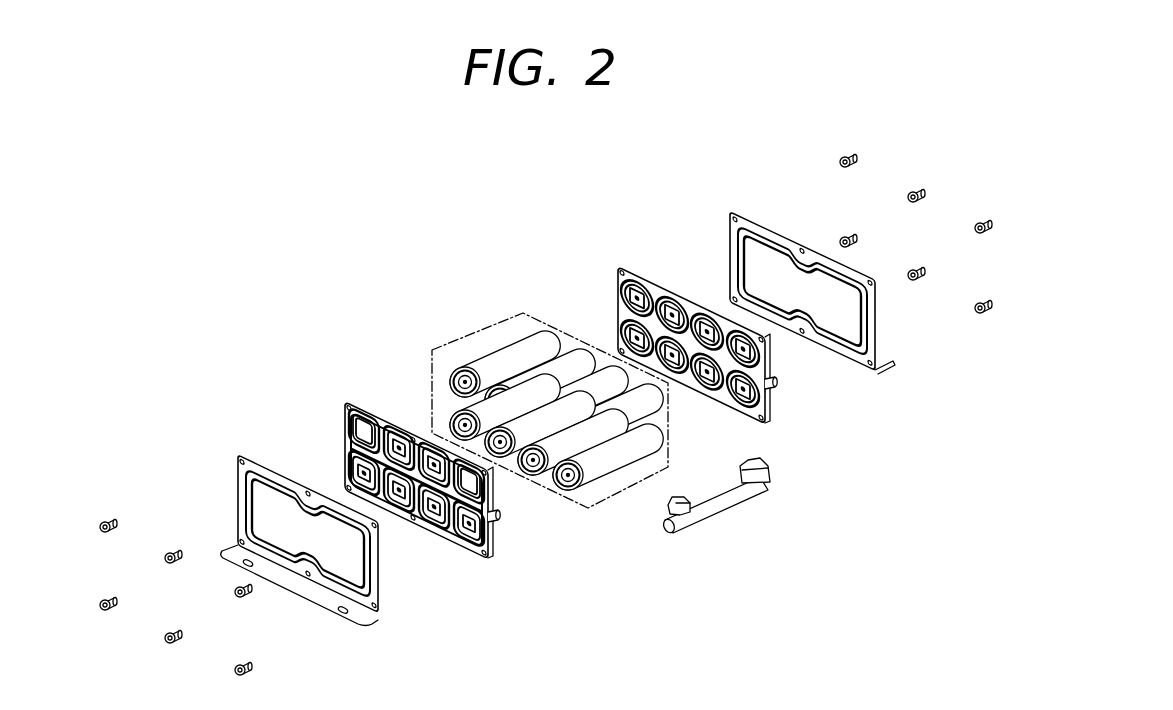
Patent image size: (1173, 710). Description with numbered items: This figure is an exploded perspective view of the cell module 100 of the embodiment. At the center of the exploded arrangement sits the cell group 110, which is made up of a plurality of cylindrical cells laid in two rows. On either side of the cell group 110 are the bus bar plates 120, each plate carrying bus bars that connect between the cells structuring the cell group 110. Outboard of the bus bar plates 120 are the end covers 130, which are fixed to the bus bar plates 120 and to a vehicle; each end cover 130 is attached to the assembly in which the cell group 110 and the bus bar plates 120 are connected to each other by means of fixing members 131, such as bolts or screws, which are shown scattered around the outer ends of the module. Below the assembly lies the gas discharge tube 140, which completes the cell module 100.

The cell module 100 is at (437, 213).
The cell group 110 is at (488, 328).
The bus bar plates 120 is at (366, 410).
The end covers 130 is at (256, 463).
The fixing members 131 is at (170, 552).
The gas discharge tube 140 is at (728, 508).